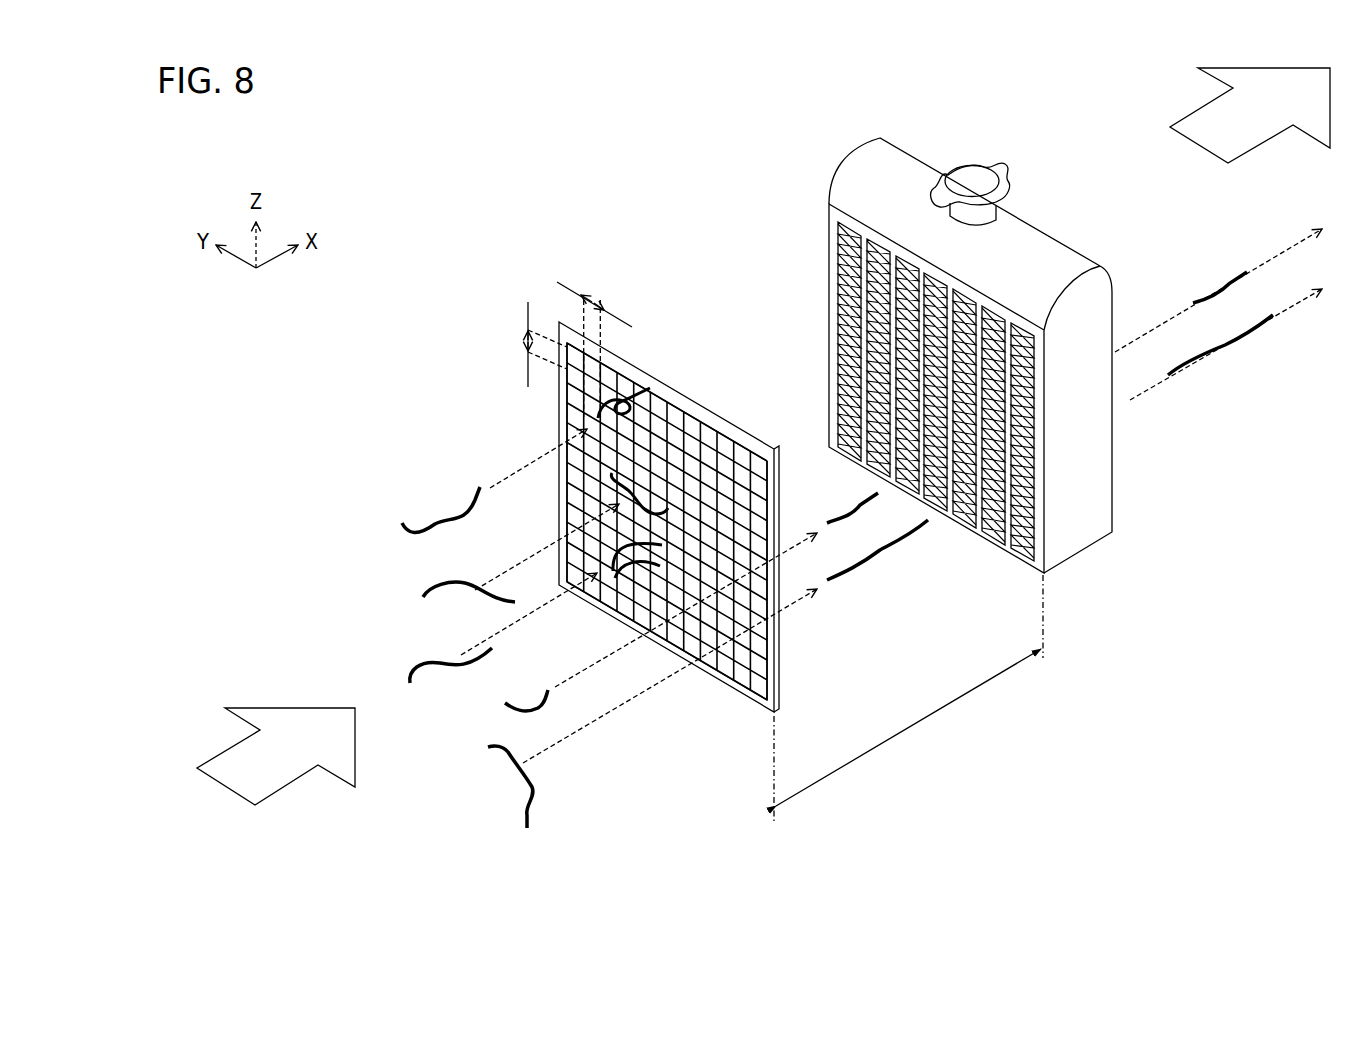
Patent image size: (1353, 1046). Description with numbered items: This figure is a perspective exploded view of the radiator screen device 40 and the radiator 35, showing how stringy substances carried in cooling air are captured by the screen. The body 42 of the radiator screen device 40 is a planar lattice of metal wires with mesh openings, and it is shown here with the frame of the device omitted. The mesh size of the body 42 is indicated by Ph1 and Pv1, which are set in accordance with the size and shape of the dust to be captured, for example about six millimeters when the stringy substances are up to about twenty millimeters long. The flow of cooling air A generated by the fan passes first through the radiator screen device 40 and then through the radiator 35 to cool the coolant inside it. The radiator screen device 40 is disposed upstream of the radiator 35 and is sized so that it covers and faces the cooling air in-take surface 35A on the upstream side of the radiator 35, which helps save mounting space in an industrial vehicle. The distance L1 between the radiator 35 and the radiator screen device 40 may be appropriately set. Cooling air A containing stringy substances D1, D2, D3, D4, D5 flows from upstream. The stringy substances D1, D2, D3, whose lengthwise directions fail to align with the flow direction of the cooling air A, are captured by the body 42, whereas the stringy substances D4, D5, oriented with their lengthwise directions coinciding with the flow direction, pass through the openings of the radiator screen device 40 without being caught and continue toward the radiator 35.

The radiator 35 is at (865, 177).
The cooling air in-take surface 35A is at (866, 275).
The body 42 is at (527, 274).
The radiator screen device 40 is at (638, 466).
The stringy substance D1 is at (598, 418).
The stringy substance D2 is at (612, 474).
The stringy substance D3 is at (614, 573).
The stringy substance D4 is at (899, 474).
The stringy substance D5 is at (902, 558).
The mesh size Ph1 is at (594, 346).
The mesh size Pv1 is at (524, 344).
The distance L1 is at (908, 698).
The cooling air A is at (243, 762).